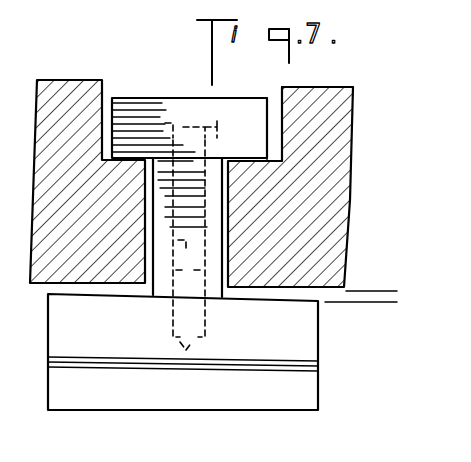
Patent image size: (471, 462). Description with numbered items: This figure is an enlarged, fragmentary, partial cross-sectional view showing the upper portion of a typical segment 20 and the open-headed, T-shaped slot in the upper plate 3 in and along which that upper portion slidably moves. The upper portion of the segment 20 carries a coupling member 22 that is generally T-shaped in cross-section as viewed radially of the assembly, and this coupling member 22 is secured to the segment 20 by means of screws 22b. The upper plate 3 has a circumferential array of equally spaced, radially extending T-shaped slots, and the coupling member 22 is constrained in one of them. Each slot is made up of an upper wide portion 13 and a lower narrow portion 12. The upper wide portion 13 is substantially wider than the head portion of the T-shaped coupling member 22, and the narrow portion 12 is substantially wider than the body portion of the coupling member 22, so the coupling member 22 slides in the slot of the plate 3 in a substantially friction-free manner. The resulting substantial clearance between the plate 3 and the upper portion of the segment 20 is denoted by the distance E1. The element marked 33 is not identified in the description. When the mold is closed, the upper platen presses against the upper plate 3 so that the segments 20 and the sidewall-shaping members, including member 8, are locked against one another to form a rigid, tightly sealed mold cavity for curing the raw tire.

The upper plate 3 is at (60, 117).
The lower narrow portion 12 is at (240, 192).
The coupling member 22 is at (239, 103).
The screws 22b is at (185, 100).
The upper wide portion 13 is at (283, 93).
The top surface 33 is at (333, 57).
The segment 20 is at (334, 367).
The clearance distance E1 is at (385, 248).
The sidewall-shaping member 8 is at (65, 35).